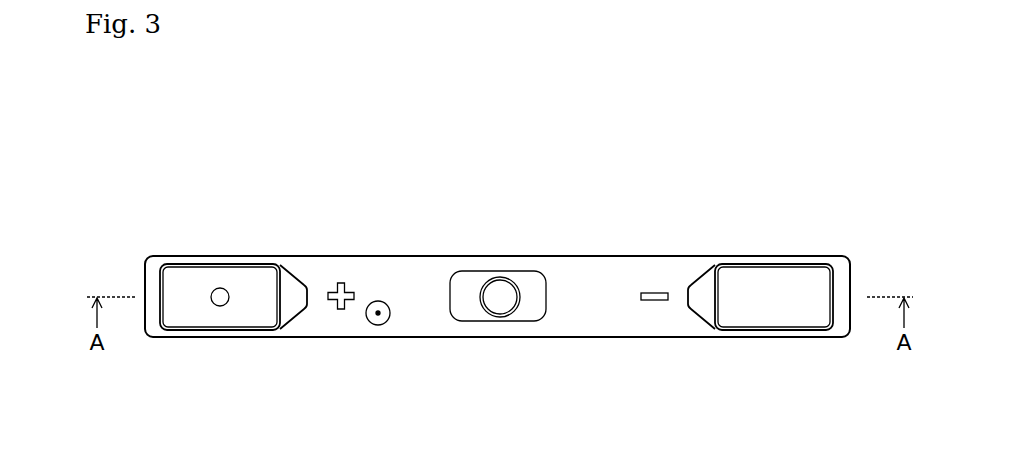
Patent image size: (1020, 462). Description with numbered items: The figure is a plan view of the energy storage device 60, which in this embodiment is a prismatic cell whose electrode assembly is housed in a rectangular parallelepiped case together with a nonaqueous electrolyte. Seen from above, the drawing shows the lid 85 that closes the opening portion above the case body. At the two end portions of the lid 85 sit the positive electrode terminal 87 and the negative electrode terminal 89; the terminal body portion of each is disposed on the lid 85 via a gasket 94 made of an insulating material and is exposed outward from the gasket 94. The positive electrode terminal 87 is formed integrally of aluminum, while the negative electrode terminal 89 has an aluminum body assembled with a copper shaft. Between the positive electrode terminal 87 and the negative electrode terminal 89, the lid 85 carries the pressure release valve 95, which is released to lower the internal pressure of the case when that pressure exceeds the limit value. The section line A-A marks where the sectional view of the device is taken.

The energy storage device 60 is at (818, 225).
The lid 85 is at (425, 269).
The positive electrode terminal 87 is at (221, 277).
The negative electrode terminal 89 is at (765, 282).
The gasket 94 is at (294, 290).
The pressure release valve 95 is at (500, 290).